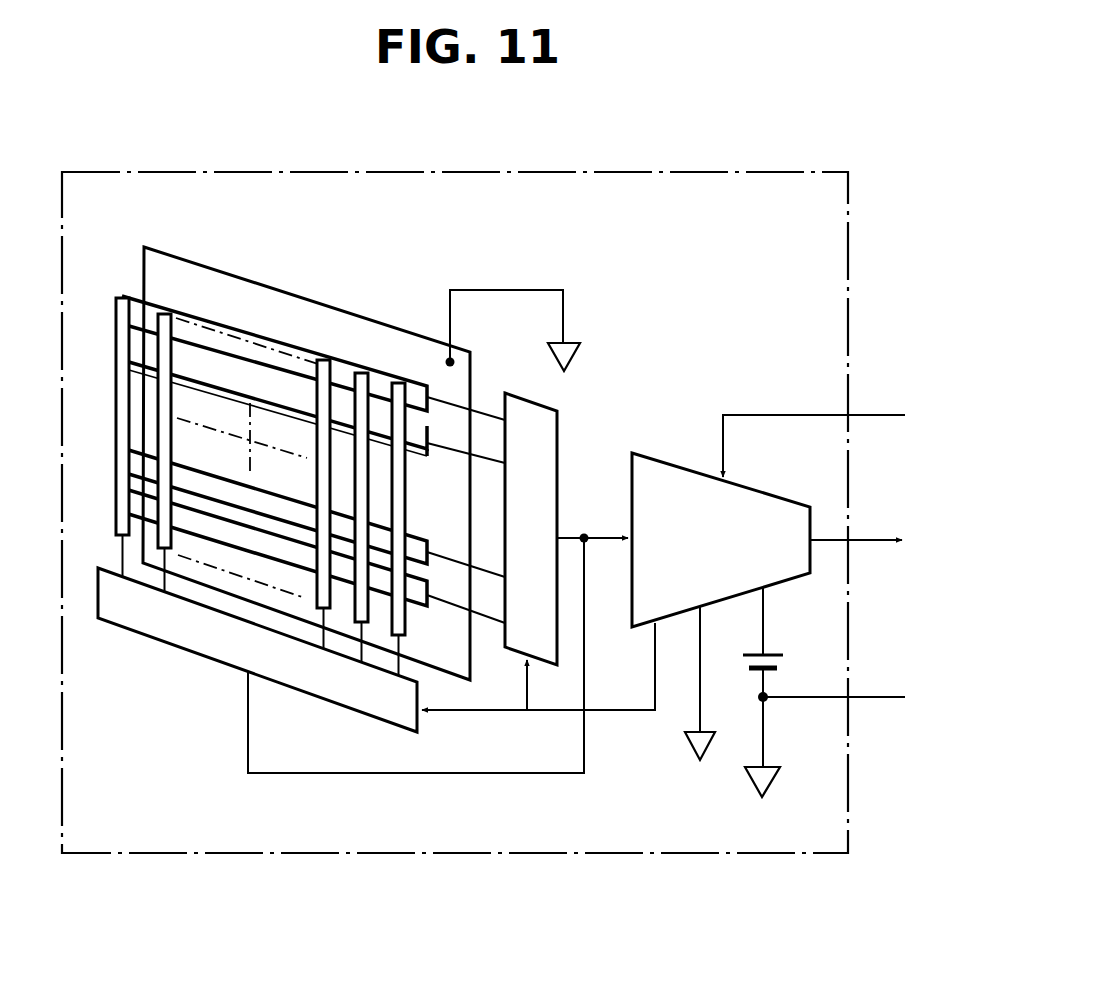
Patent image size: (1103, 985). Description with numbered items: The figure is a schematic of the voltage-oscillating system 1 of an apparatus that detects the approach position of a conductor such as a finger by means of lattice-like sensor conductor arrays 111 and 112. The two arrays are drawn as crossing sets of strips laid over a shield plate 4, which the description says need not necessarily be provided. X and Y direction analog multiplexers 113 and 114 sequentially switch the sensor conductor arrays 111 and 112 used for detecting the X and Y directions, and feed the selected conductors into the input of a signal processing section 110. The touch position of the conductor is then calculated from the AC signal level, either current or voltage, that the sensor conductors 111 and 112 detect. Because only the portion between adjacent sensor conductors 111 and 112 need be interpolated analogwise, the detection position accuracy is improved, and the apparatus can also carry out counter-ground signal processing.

The voltage-oscillating system 1 is at (756, 170).
The shield plate 4 is at (358, 326).
The signal processing section 110 is at (688, 471).
The sensor conductor array 111 is at (116, 355).
The sensor conductor array 112 is at (238, 325).
The analog multiplexer 113 is at (185, 646).
The analog multiplexer 114 is at (558, 436).